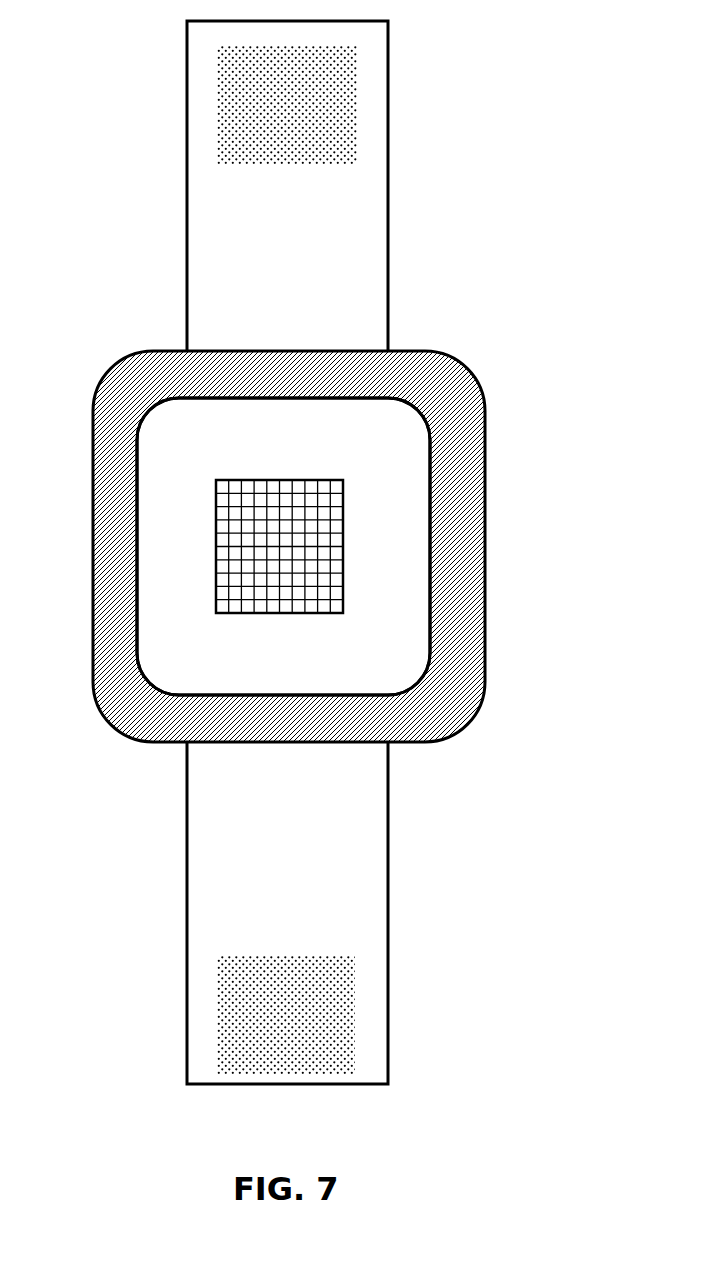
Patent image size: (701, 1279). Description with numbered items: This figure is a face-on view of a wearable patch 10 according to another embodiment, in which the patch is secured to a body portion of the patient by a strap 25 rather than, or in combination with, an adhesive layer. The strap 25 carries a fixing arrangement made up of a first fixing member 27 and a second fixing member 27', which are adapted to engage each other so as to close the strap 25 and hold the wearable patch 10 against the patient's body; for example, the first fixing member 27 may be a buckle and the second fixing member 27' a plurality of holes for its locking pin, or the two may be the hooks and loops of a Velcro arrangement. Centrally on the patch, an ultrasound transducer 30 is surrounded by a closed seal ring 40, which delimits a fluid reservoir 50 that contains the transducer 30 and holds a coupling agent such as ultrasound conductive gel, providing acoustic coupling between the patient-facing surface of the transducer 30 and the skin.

The wearable patch 10 is at (321, 583).
The strap 25 is at (367, 292).
The first fixing member 27 is at (365, 105).
The second fixing member 27' is at (369, 1015).
The ultrasound transducer 30 is at (245, 535).
The seal ring 40 is at (458, 490).
The fluid reservoir 50 is at (408, 625).